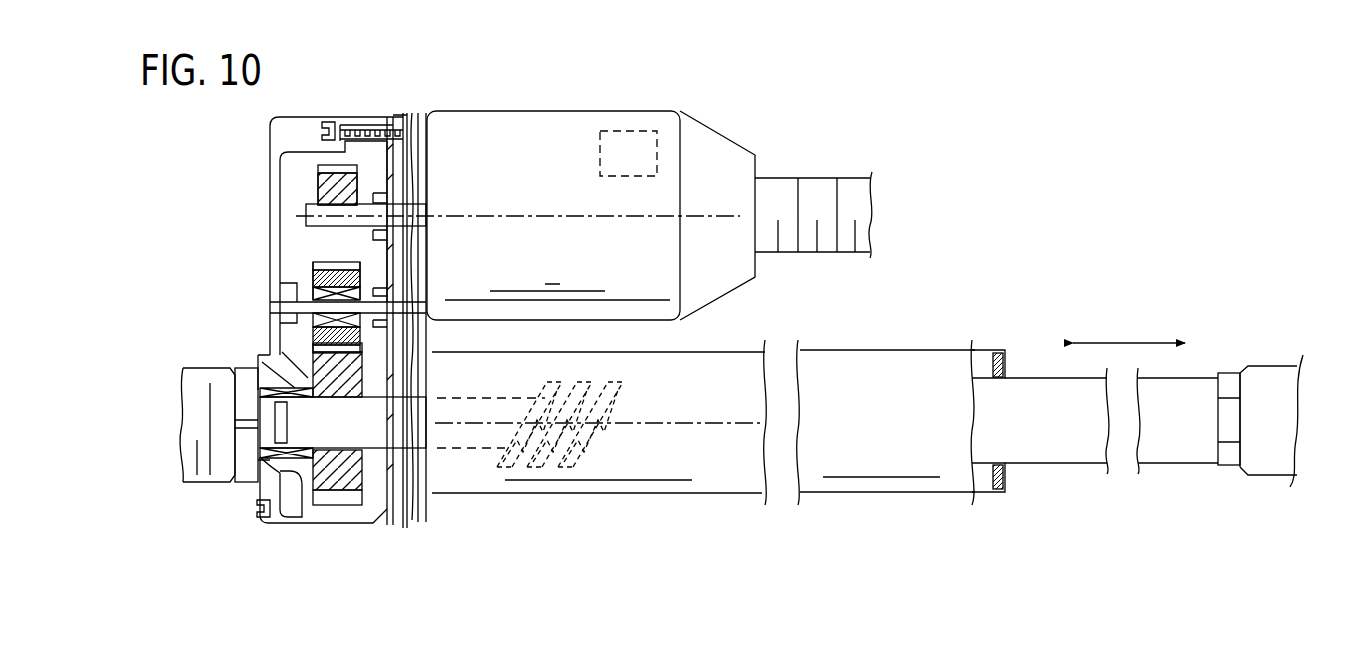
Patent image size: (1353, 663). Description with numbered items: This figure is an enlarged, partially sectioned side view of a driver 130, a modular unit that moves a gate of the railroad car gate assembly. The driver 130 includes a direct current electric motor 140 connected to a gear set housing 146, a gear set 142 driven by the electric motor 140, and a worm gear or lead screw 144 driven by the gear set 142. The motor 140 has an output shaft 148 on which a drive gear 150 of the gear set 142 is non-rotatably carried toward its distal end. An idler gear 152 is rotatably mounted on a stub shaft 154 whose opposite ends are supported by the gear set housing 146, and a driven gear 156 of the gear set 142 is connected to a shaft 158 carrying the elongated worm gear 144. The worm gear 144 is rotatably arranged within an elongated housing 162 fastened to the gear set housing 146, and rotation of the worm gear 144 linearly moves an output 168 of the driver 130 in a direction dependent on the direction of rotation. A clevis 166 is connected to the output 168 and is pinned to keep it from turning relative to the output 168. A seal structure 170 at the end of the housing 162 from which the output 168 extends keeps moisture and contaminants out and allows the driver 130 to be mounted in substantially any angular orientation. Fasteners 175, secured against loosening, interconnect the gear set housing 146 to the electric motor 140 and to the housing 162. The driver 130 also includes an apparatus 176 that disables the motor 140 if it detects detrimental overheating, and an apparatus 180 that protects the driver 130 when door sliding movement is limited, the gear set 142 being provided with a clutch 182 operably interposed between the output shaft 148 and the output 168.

The driver 130 is at (735, 87).
The direct current electric motor 140 is at (541, 129).
The gear set 142 is at (305, 190).
The worm gear or lead screw 144 is at (606, 393).
The gear set housing 146 is at (272, 183).
The output shaft 148 is at (300, 214).
The drive gear 150 is at (352, 190).
The idler gear 152 is at (358, 292).
The stub shaft 154 is at (300, 310).
The driven gear 156 is at (322, 480).
The shaft 158 is at (404, 412).
The elongated housing 162 is at (893, 360).
The clevis 166 is at (1265, 378).
The output 168 is at (1068, 447).
The seal structure 170 is at (1012, 372).
The fasteners 175 is at (327, 122).
The apparatus for inhibiting damage from overheating 176 is at (620, 152).
The apparatus for inhibiting damage to the driver 180 is at (316, 287).
The clutch 182 is at (422, 335).